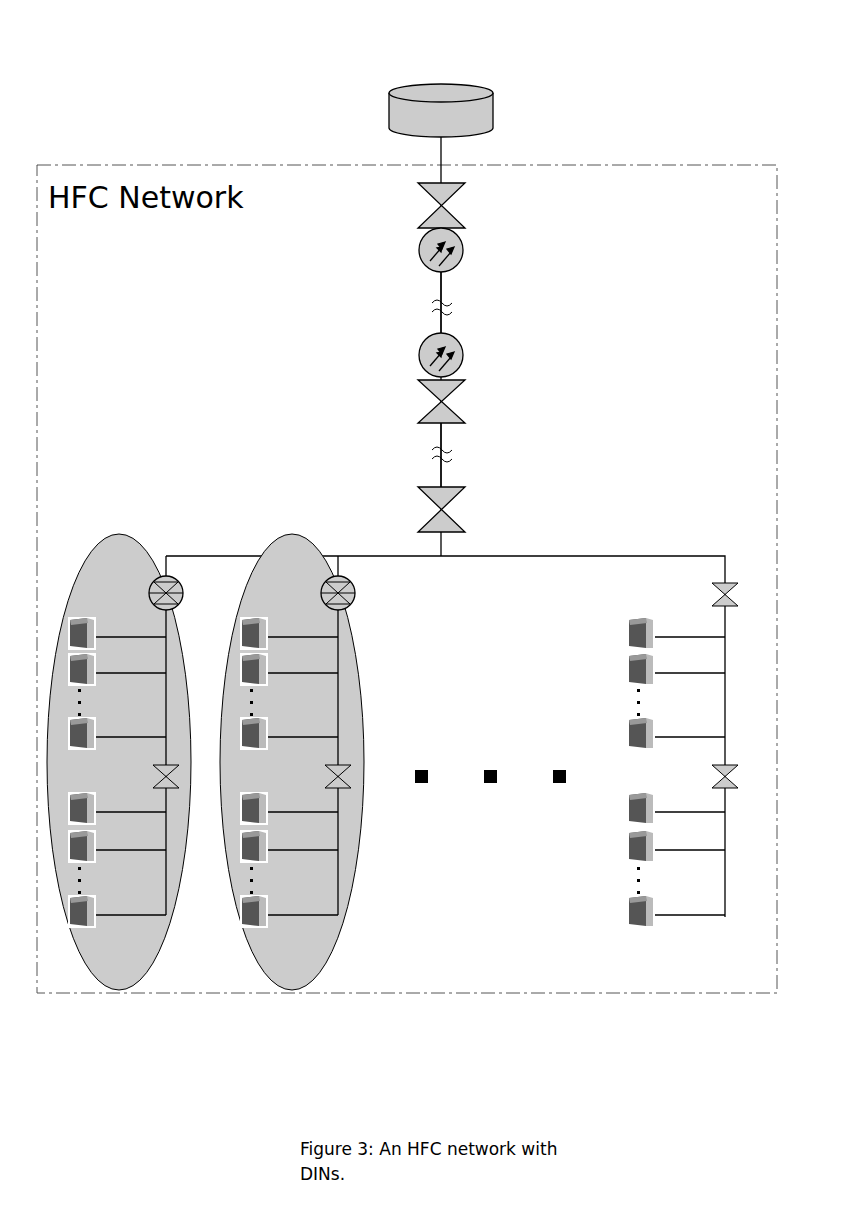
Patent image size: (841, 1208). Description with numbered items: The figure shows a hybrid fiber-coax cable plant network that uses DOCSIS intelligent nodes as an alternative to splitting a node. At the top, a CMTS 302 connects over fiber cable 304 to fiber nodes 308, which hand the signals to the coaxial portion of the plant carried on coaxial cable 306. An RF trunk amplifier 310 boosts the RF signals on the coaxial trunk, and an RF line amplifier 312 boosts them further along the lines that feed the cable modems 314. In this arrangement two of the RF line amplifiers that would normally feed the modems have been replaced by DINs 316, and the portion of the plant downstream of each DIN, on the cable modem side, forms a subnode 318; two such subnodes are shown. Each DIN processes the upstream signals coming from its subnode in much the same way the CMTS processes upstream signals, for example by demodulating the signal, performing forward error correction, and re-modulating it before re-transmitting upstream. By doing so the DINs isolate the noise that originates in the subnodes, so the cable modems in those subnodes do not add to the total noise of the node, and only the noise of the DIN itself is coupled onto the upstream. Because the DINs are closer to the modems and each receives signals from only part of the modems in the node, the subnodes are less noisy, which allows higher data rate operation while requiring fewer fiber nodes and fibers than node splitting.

The CMTS 302 is at (441, 83).
The fiber cable 304 is at (446, 287).
The coaxial cable 306 is at (438, 150).
The fiber nodes 308 is at (468, 208).
The RF trunk amplifier 310 is at (455, 510).
The RF line amplifier 312 is at (712, 594).
The cable modems 314 is at (267, 922).
The DINs 316 is at (322, 577).
The subnodes 318 is at (270, 988).